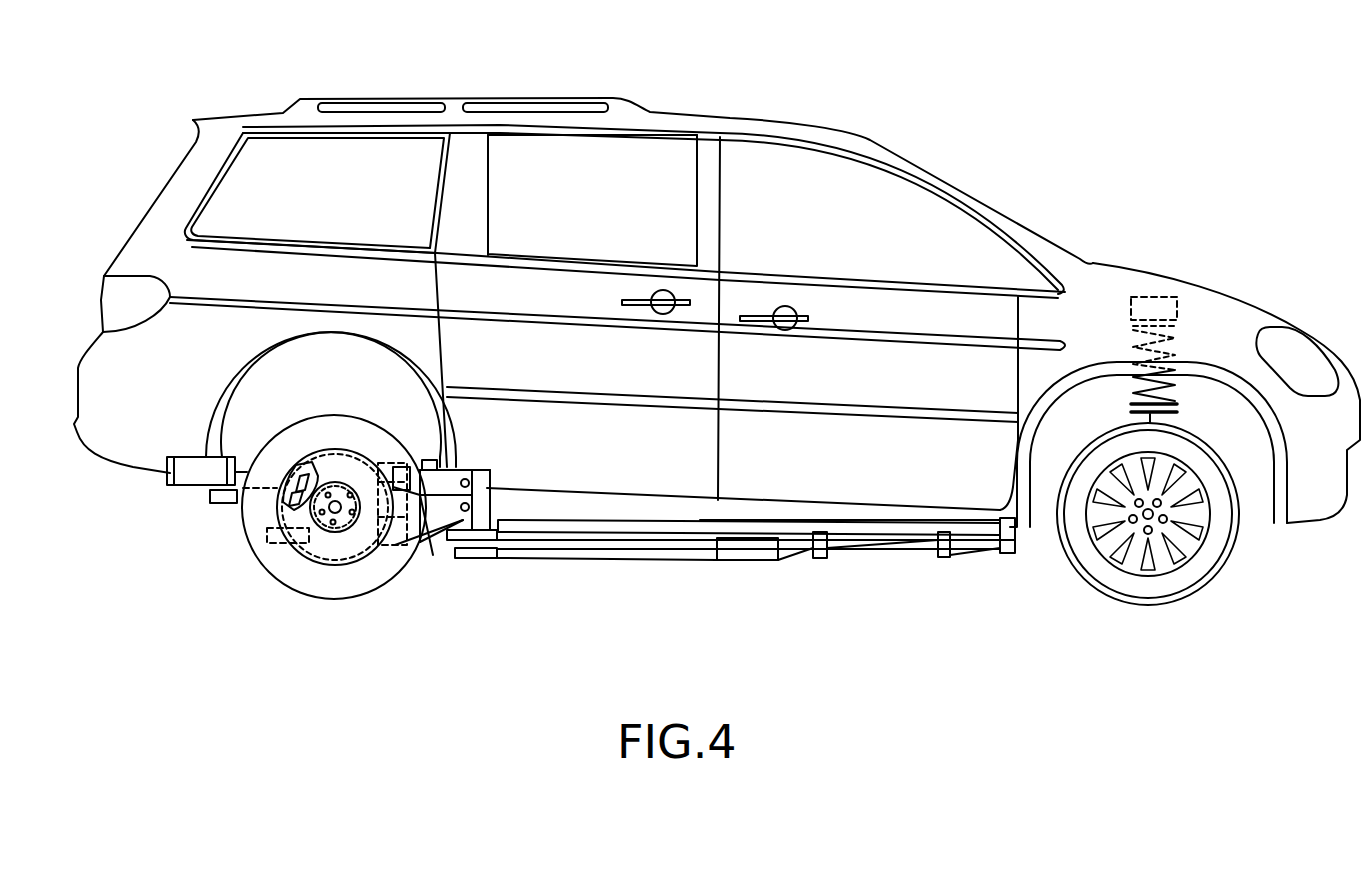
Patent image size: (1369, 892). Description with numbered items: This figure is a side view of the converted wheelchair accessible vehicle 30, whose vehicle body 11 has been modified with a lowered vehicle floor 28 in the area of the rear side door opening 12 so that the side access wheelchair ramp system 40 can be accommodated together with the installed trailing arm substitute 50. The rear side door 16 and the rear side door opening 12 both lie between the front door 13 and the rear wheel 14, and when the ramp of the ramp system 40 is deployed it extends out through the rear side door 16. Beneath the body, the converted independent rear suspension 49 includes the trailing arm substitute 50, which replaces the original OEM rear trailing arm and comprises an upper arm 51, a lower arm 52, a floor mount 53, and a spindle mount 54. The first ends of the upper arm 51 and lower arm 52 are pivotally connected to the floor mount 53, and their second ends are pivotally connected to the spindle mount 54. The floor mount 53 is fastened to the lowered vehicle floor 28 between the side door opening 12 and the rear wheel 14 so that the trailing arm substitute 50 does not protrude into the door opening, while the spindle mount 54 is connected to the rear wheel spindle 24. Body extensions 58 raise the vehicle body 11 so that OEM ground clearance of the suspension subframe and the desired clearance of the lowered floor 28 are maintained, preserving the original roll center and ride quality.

The vehicle body 11 is at (1170, 297).
The rear side door opening 12 is at (641, 133).
The front door 13 is at (905, 507).
The rear wheel 14 is at (276, 552).
The rear side door 16 is at (557, 152).
The rear wheel spindle 24 is at (313, 546).
The lowered vehicle floor 28 is at (700, 558).
The converted wheelchair accessible vehicle 30 is at (1238, 265).
The side access wheelchair ramp system 40 is at (605, 528).
The converted independent rear suspension 49 is at (236, 554).
The trailing arm substitute 50 is at (433, 544).
The upper arm 51 is at (414, 541).
The lower arm 52 is at (456, 545).
The floor mount 53 is at (475, 518).
The spindle mount 54 is at (372, 546).
The body extensions 58 is at (190, 486).